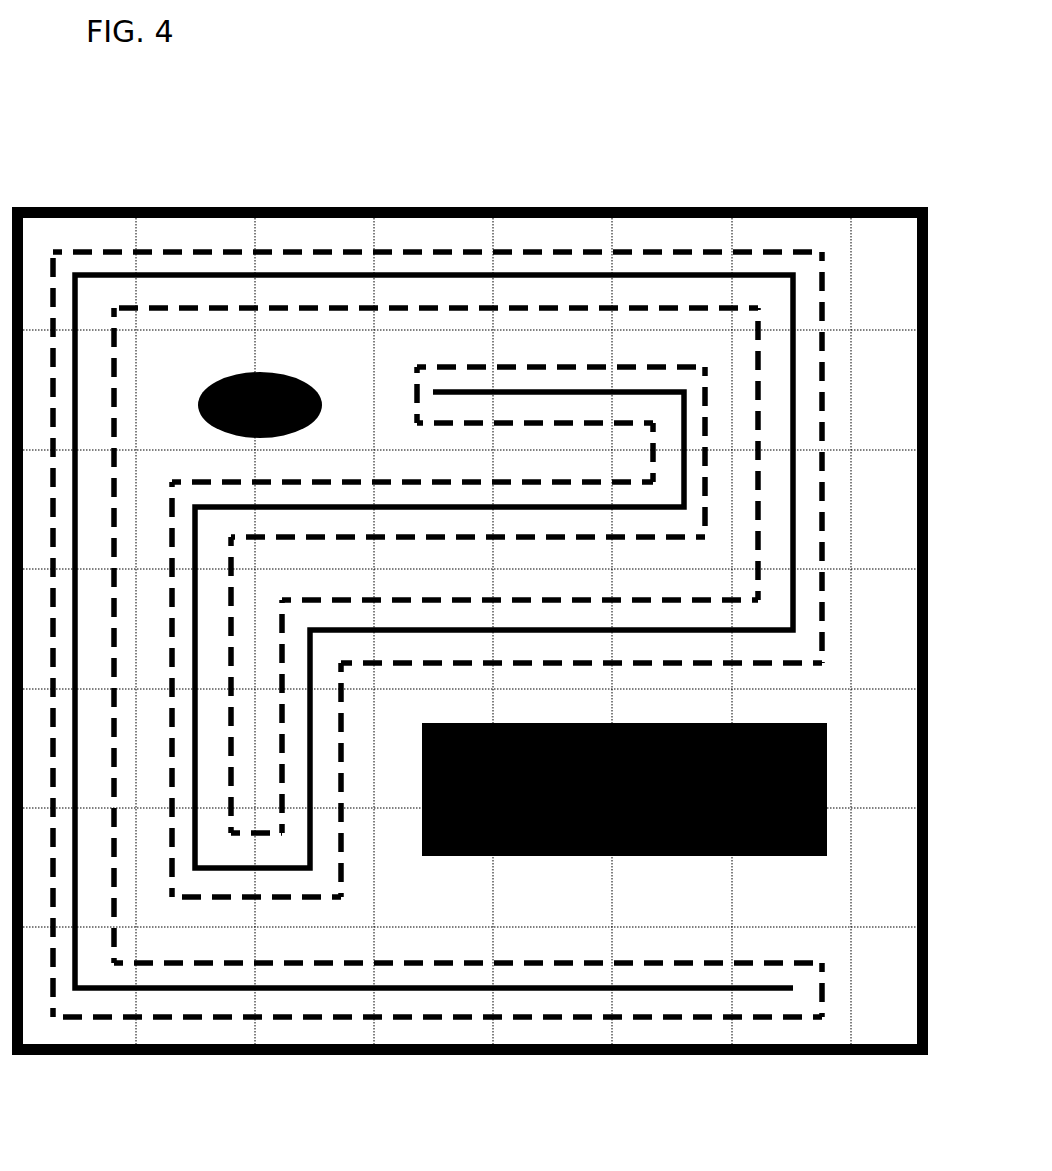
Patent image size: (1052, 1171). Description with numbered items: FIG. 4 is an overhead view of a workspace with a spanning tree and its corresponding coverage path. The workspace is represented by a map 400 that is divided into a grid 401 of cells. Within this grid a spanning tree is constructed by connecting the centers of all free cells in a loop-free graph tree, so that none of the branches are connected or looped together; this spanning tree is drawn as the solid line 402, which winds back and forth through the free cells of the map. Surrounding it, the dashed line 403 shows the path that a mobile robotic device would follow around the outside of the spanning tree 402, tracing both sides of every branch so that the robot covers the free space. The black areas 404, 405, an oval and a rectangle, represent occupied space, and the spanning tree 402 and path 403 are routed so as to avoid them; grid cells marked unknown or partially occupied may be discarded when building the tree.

The map 400 is at (188, 208).
The grid 401 is at (880, 330).
The spanning tree 402 is at (316, 275).
The path 403 is at (706, 252).
The black area 404 is at (260, 405).
The black area 405 is at (624, 789).